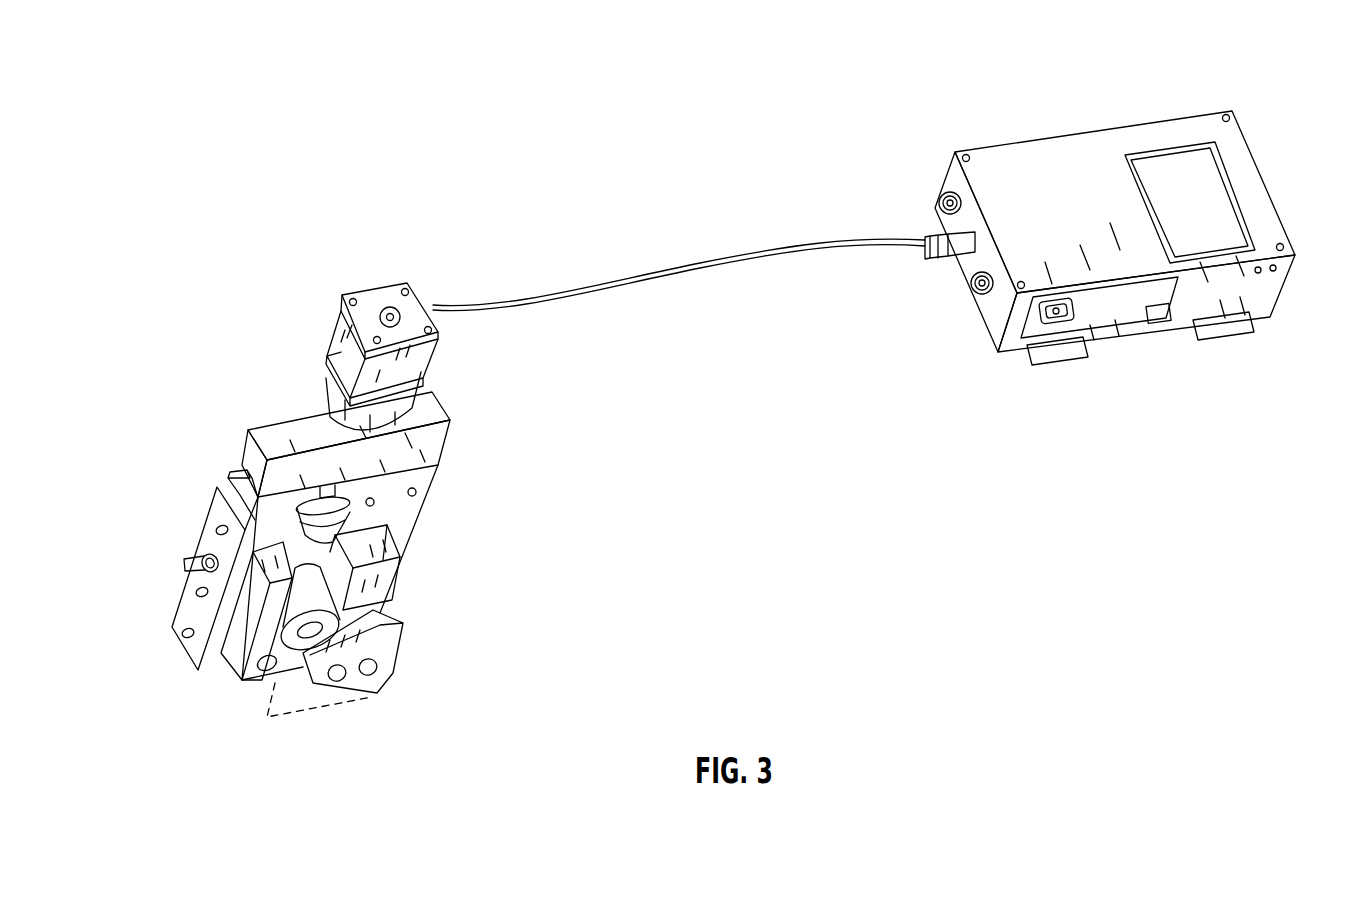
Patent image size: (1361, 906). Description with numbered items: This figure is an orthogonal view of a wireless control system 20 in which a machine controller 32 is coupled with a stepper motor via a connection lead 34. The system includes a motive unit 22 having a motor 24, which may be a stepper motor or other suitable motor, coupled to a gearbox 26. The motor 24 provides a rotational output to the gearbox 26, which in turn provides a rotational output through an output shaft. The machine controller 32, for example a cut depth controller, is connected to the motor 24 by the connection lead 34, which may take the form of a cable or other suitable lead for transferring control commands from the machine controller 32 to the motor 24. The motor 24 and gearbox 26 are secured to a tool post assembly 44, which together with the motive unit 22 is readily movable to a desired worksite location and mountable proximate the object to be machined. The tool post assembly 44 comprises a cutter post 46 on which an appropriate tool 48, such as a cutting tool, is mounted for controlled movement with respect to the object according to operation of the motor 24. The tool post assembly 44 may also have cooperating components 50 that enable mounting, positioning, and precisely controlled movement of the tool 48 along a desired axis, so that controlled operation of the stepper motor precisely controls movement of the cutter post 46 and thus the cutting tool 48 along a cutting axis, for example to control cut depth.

The wireless control system 20 is at (1060, 68).
The motive unit 22 is at (338, 290).
The motor 24 is at (427, 360).
The gearbox 26 is at (400, 410).
The machine controller 32 is at (1268, 204).
The connection lead 34 is at (683, 282).
The tool post assembly 44 is at (440, 522).
The cutter post 46 is at (397, 647).
The tool 48 is at (293, 715).
The cooperating components 50 is at (220, 487).